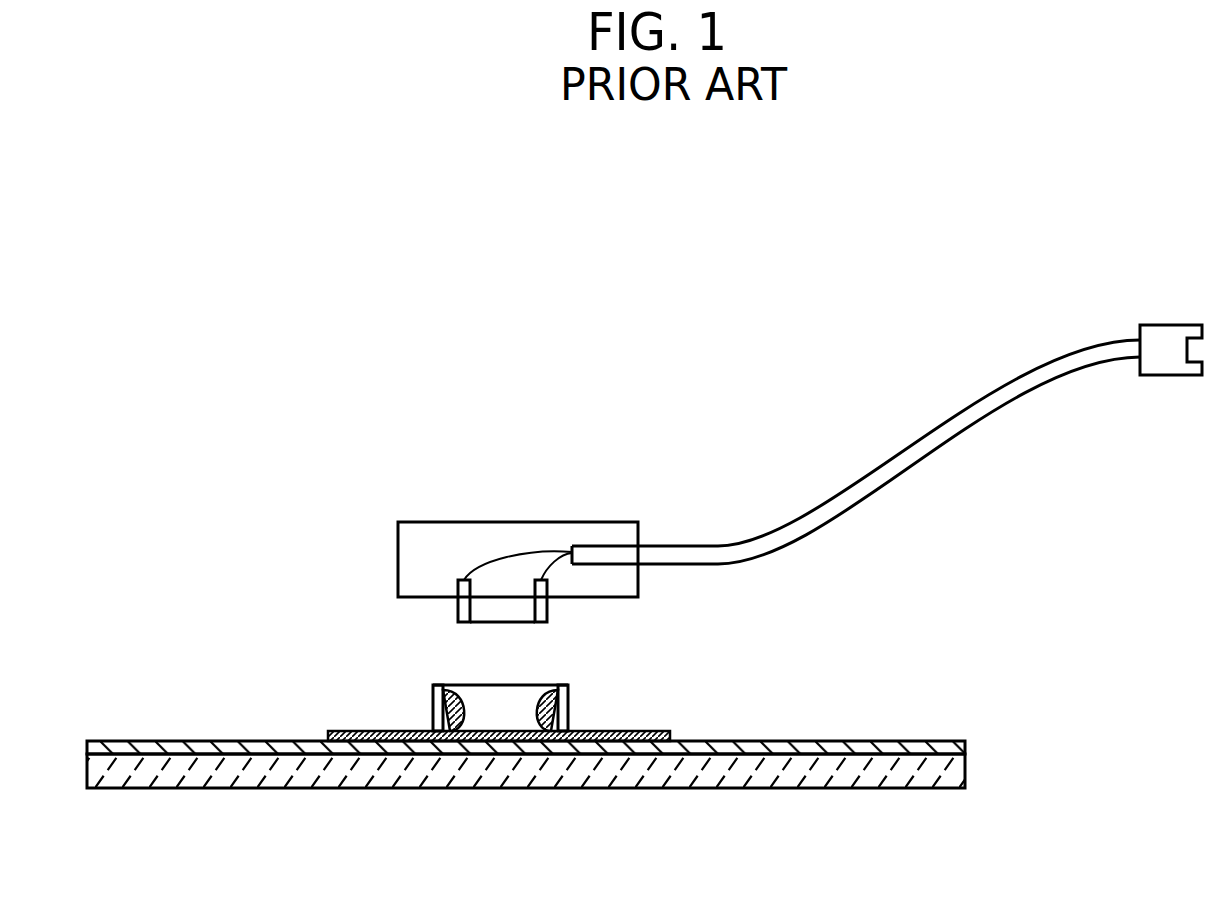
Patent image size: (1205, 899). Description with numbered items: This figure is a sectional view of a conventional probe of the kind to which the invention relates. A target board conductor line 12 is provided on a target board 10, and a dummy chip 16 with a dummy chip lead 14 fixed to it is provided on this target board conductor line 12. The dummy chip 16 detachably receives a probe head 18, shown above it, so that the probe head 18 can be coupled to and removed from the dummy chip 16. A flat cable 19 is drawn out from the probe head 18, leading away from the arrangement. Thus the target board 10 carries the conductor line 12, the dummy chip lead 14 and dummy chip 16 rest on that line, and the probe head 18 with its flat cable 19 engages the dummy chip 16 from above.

The target board 10 is at (778, 776).
The target board conductor line 12 is at (900, 742).
The dummy chip lead 14 is at (652, 731).
The dummy chip 16 is at (578, 692).
The probe head 18 is at (542, 532).
The flat cable 19 is at (996, 393).